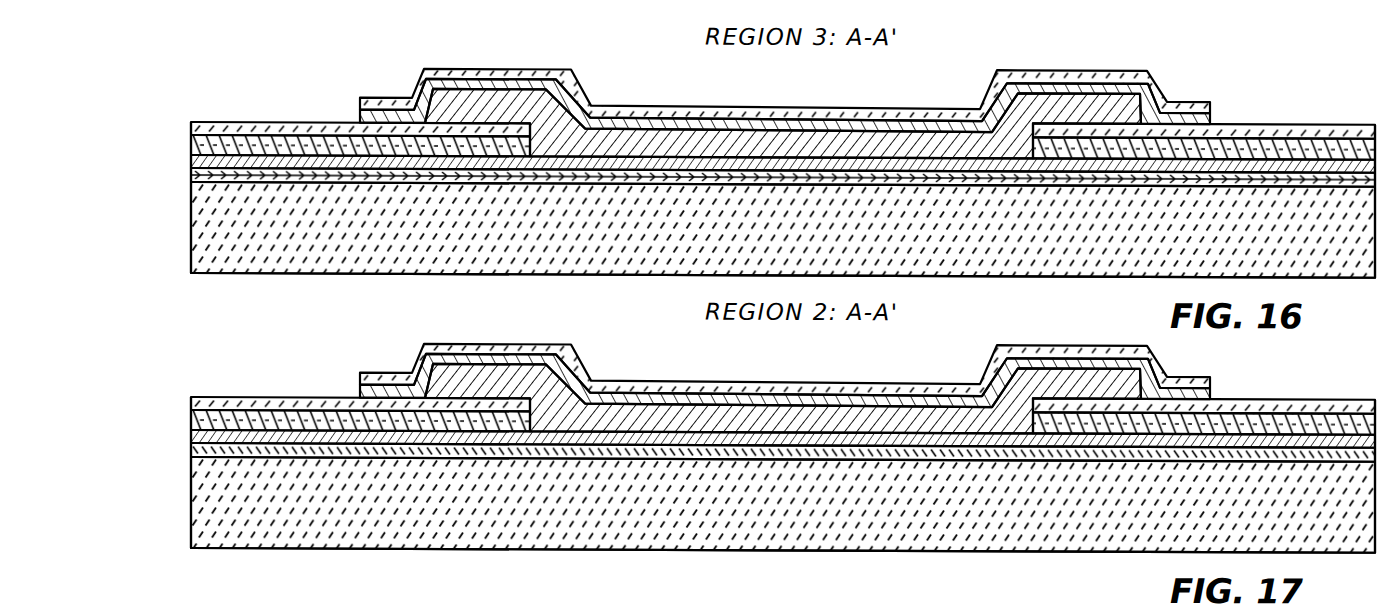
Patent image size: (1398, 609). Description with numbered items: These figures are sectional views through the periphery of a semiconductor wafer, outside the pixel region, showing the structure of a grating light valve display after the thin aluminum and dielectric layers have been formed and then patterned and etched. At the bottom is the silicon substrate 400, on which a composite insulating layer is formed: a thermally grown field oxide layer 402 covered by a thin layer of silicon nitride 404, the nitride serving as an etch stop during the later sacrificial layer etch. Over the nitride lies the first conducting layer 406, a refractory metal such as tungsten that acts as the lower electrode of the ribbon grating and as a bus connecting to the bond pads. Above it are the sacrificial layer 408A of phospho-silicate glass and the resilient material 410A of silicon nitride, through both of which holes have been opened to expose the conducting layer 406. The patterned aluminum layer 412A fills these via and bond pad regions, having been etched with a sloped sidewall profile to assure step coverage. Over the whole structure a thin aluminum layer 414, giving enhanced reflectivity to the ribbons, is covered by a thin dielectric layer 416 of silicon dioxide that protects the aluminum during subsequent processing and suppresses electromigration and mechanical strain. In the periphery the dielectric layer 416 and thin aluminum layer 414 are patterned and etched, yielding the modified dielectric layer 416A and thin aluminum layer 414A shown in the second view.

In FIG. 16, the silicon substrate 400 is at (266, 302).
In FIG. 17, the silicon substrate 400 is at (783, 489).
In FIG. 16, the field oxide layer 402 is at (265, 247).
In FIG. 17, the field oxide layer 402 is at (783, 505).
In FIG. 16, the silicon nitride layer 404 is at (191, 176).
In FIG. 17, the silicon nitride layer 404 is at (734, 468).
In FIG. 16, the first conducting layer 406 is at (191, 157).
In FIG. 17, the first conducting layer 406 is at (742, 427).
In FIG. 16, the sacrificial layer 408A is at (191, 137).
In FIG. 17, the sacrificial layer 408A is at (737, 410).
In FIG. 16, the resilient material 410A is at (191, 123).
In FIG. 17, the resilient material 410A is at (734, 384).
In FIG. 16, the aluminum layer 412A is at (700, 133).
In FIG. 17, the aluminum layer 412A is at (783, 394).
In FIG. 16, the thin aluminum layer 414 is at (360, 108).
In FIG. 17, the thin aluminum layer 414A is at (740, 380).
In FIG. 16, the thin dielectric layer 416 is at (552, 68).
In FIG. 17, the dielectric layer 416A is at (785, 346).